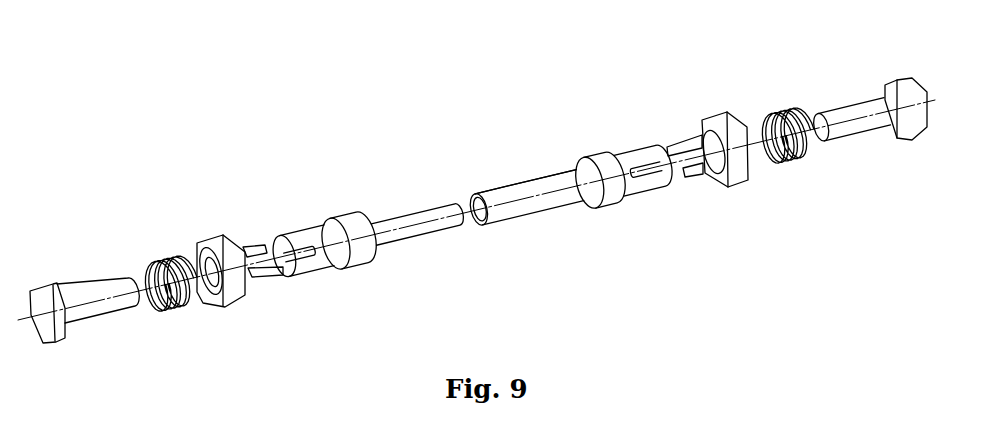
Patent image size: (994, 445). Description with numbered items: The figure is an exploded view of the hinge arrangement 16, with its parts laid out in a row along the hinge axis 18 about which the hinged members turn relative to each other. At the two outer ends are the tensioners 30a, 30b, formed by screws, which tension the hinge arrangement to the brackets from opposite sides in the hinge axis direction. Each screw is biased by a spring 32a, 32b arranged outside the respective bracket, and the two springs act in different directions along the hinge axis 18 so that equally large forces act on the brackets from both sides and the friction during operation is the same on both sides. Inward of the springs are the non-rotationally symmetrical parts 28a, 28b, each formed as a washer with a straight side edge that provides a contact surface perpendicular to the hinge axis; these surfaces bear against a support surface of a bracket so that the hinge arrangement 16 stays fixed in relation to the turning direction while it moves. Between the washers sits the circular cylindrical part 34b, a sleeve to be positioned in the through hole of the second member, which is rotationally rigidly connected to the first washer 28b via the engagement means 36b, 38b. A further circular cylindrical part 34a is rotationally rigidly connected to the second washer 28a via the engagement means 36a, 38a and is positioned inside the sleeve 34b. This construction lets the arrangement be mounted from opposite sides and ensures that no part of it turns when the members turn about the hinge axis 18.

The hinge arrangement 16 is at (452, 77).
The hinge axis 18 is at (543, 196).
The non-rotationally symmetrical part 28a is at (214, 236).
The non-rotationally symmetrical part 28b is at (707, 118).
The tensioner 30a is at (92, 284).
The tensioner 30b is at (848, 106).
The spring 32a is at (163, 262).
The spring 32b is at (793, 113).
The further circular cylindrical part 34a is at (405, 213).
The circular cylindrical part 34b is at (533, 176).
The engagement means 36a is at (264, 278).
The engagement means 36b is at (704, 174).
The engagement means 38a is at (336, 265).
The engagement means 38b is at (638, 196).